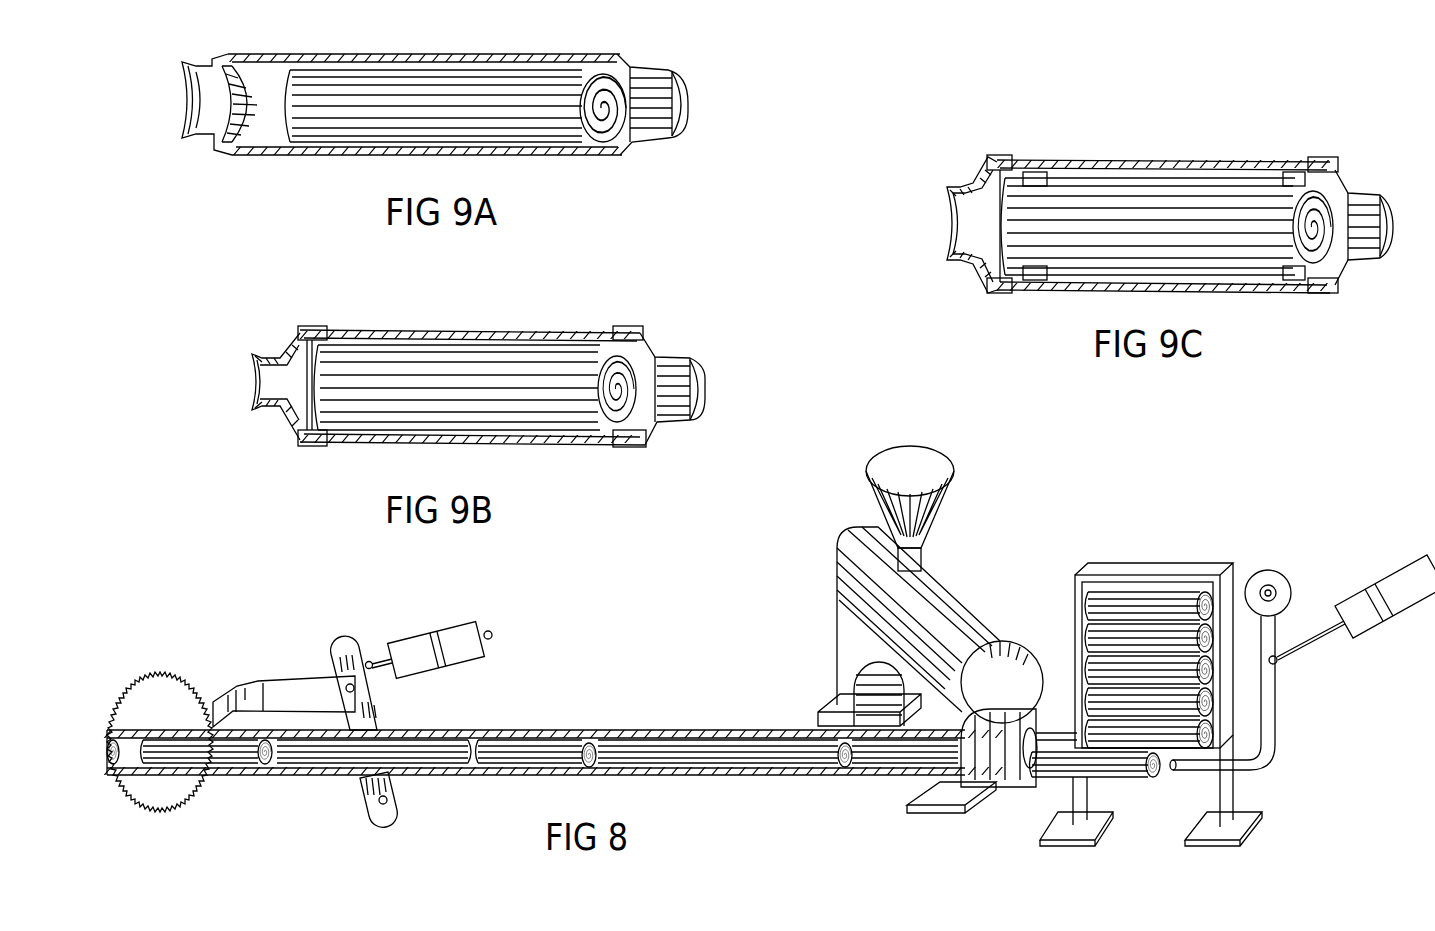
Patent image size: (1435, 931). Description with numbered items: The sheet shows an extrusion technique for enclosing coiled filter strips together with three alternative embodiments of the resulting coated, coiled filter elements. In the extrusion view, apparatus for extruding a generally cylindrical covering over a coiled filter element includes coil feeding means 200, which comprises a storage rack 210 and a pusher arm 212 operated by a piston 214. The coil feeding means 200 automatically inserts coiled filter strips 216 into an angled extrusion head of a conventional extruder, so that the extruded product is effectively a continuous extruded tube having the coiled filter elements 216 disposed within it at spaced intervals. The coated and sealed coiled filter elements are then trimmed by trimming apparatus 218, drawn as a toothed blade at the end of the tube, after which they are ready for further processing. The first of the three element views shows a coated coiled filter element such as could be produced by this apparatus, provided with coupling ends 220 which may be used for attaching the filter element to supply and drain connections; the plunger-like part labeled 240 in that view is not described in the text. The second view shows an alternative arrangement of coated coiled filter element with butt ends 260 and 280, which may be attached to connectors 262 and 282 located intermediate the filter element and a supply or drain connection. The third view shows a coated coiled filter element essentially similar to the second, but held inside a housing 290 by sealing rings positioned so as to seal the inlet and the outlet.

In FIG. 8, the coil feeding means 200 is at (1080, 572).
In FIG. 8, the storage rack 210 is at (1133, 590).
In FIG. 8, the pusher arm 212 is at (1278, 722).
In FIG. 8, the piston 214 is at (1377, 580).
In FIG. 8, the coiled filter strips 216 is at (545, 752).
In FIG. 8, the trimming apparatus 218 is at (158, 720).
In FIG. 9A, the coupling ends 220 is at (683, 127).
In FIG. 9A, the plunger 240 is at (195, 133).
In FIG. 9B, the butt end 260 is at (657, 423).
In FIG. 9B, the connector 262 is at (695, 362).
In FIG. 9B, the butt end 280 is at (298, 432).
In FIG. 9B, the connector 282 is at (283, 354).
In FIG. 9C, the housing 290 is at (1237, 160).